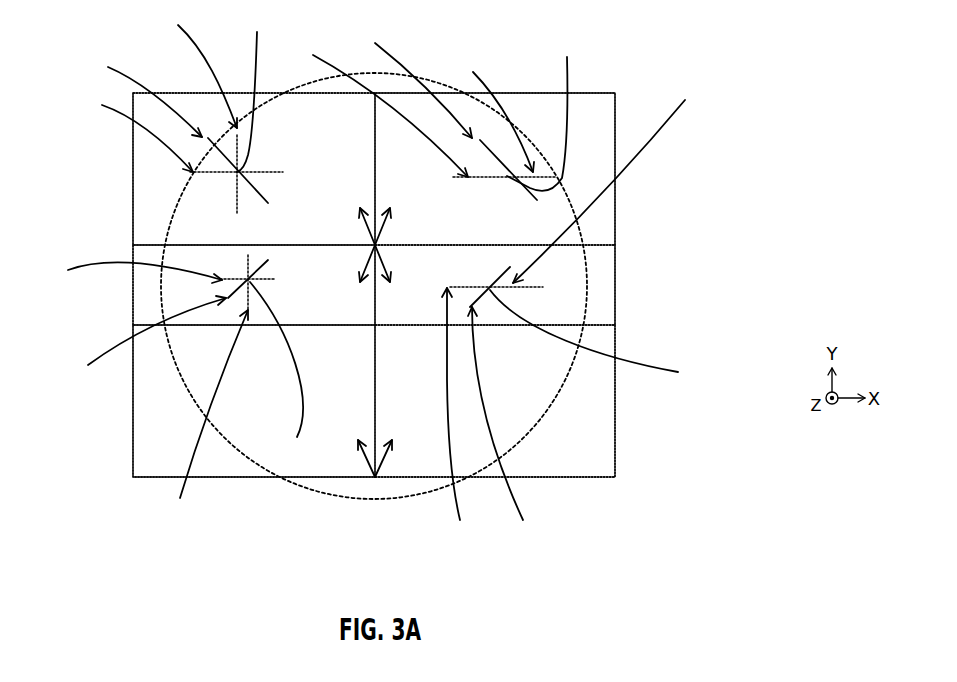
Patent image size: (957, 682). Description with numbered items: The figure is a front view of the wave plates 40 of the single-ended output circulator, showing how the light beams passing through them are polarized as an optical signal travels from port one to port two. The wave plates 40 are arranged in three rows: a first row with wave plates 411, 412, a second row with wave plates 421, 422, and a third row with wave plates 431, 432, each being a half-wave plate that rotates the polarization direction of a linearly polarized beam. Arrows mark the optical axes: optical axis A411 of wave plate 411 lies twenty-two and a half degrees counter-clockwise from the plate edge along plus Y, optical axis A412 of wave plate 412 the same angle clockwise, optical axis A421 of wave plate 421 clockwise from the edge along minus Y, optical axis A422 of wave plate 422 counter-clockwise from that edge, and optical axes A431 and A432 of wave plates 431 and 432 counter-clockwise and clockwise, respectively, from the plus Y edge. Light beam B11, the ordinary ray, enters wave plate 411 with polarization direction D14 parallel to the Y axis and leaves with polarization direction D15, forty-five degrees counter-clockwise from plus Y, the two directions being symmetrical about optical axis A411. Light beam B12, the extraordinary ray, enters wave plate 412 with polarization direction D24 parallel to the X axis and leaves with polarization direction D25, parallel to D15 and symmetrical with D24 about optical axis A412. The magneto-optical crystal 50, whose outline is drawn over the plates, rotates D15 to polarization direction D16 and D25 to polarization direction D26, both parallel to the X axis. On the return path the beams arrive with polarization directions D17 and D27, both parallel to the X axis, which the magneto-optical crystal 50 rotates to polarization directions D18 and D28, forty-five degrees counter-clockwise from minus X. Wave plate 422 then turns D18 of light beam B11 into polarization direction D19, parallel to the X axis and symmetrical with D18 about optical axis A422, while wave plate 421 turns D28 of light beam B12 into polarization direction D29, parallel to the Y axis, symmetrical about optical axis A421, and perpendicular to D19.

The wave plate 40 is at (603, 153).
The magneto-optical crystal 50 is at (297, 488).
The wave plate 411 is at (158, 212).
The wave plate 412 is at (615, 222).
The wave plate 421 is at (145, 288).
The wave plate 422 is at (605, 268).
The wave plate 431 is at (148, 440).
The wave plate 432 is at (588, 442).
The optical axis A411 is at (358, 205).
The optical axis A412 is at (392, 205).
The optical axis A421 is at (358, 285).
The optical axis A422 is at (392, 285).
The optical axis A431 is at (356, 437).
The optical axis A432 is at (394, 437).
The light beam B11 is at (466, 201).
The light beam B12 is at (408, 243).
The polarization direction D14 is at (179, 68).
The polarization direction D15 is at (131, 93).
The polarization direction D16 is at (122, 131).
The polarization direction D17 is at (619, 187).
The polarization direction D18 is at (513, 433).
The polarization direction D19 is at (462, 423).
The polarization direction D24 is at (491, 111).
The polarization direction D25 is at (392, 97).
The polarization direction D26 is at (282, 62).
The polarization direction D27 is at (129, 278).
The polarization direction D28 is at (144, 347).
The polarization direction D29 is at (200, 423).